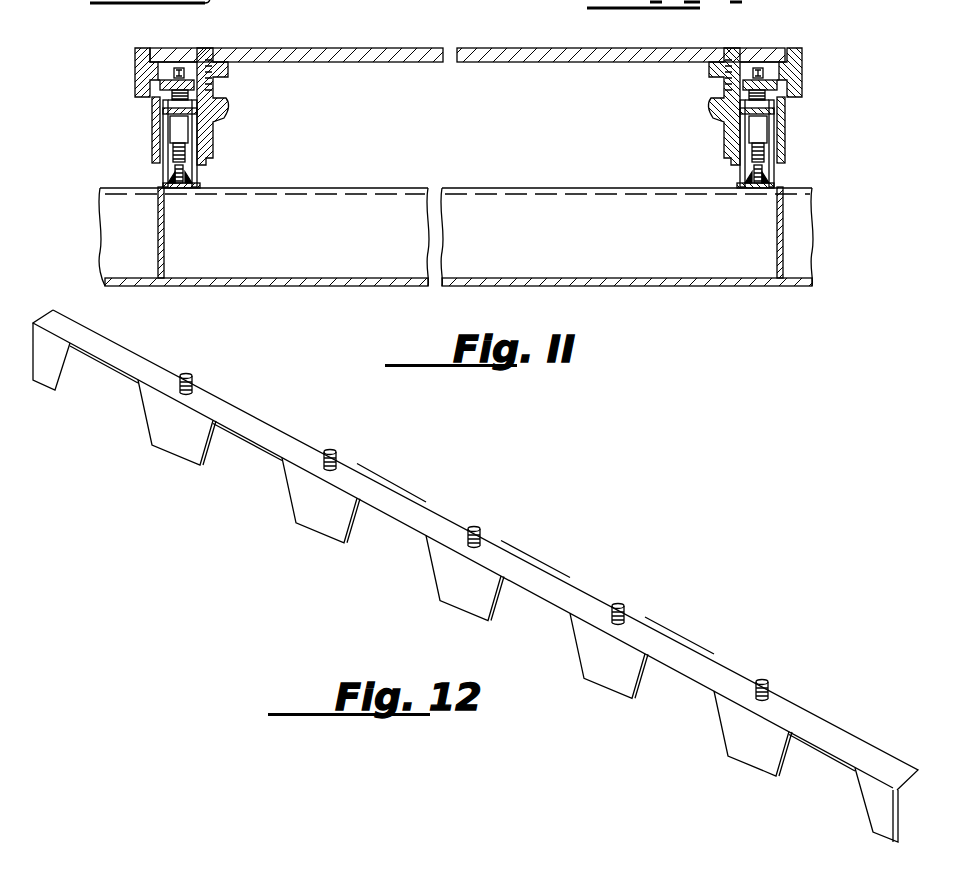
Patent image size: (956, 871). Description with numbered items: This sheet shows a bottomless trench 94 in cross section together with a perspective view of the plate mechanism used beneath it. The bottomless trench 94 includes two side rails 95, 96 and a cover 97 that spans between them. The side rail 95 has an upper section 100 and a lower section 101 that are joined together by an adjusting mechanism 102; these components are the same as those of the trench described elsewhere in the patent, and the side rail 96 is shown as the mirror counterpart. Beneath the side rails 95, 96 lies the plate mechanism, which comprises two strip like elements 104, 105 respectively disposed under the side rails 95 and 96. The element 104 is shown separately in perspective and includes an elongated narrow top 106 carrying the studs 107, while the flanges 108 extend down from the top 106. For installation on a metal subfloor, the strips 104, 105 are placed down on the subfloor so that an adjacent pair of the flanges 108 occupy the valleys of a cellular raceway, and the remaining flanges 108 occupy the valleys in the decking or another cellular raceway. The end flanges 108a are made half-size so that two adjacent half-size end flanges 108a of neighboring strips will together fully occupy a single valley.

In FIG. 11, the bottomless trench 94 is at (467, 66).
In FIG. 11, the side rail 95 is at (182, 118).
In FIG. 11, the side rail 96 is at (795, 130).
In FIG. 11, the cover 97 is at (398, 60).
In FIG. 11, the upper section 100 is at (205, 93).
In FIG. 11, the lower section 101 is at (190, 180).
In FIG. 11, the adjusting mechanism 102 is at (175, 135).
In FIG. 11, the strip like element 104 is at (165, 203).
In FIG. 12, the strip like element 104 is at (475, 576).
In FIG. 11, the strip like element 105 is at (769, 201).
In FIG. 12, the elongated narrow top 106 is at (413, 517).
In FIG. 11, the studs 107 is at (132, 167).
In FIG. 12, the studs 107 is at (192, 378).
In FIG. 11, the flanges 108 is at (157, 233).
In FIG. 12, the flanges 108 is at (307, 507).
In FIG. 12, the end flanges 108a is at (45, 373).